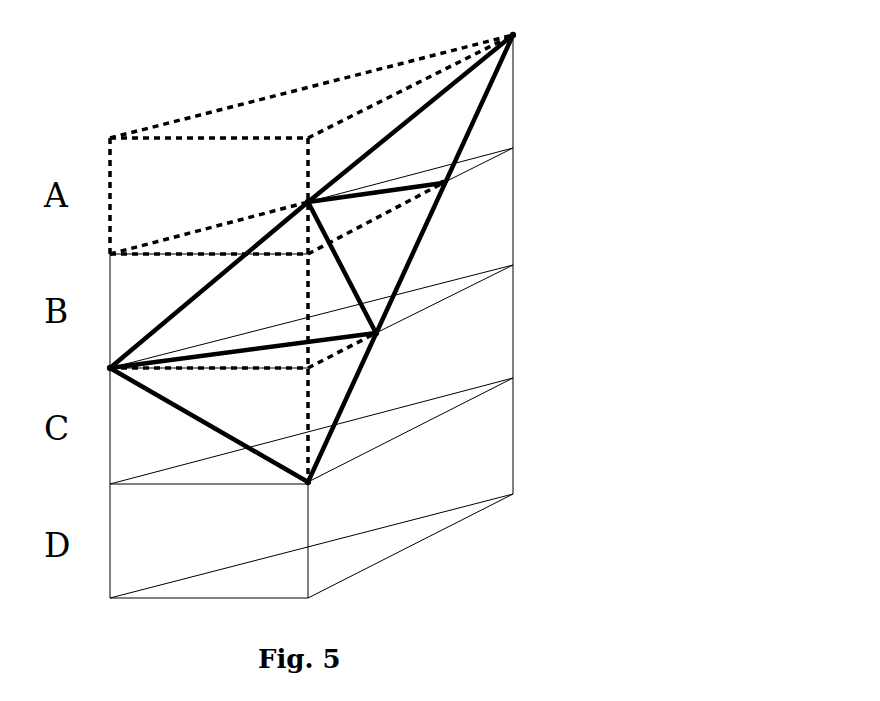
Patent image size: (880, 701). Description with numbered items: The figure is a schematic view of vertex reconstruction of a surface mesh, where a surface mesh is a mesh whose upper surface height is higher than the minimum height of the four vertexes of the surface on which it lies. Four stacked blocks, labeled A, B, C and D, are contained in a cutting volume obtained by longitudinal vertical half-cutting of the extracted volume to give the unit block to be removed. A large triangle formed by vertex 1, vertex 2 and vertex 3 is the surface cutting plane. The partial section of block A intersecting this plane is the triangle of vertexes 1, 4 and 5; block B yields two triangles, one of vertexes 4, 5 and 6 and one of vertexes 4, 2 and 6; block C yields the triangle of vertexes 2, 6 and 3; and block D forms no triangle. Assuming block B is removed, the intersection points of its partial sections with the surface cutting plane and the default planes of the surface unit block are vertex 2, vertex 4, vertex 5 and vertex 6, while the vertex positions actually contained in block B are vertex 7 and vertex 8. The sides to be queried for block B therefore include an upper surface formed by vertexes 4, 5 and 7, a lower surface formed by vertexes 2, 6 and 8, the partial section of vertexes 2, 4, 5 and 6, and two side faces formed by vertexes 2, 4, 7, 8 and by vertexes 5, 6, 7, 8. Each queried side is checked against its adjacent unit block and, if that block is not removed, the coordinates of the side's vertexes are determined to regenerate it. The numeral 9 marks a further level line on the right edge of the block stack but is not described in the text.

The vertex 1 is at (527, 29).
The vertex 2 is at (94, 372).
The vertex 3 is at (321, 501).
The vertex 4 is at (326, 220).
The vertex 5 is at (455, 200).
The vertex 6 is at (386, 351).
The vertex 7 is at (427, 170).
The vertex 8 is at (328, 308).
The level line C/D 9 is at (328, 423).